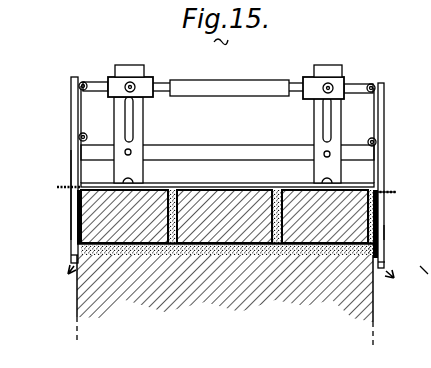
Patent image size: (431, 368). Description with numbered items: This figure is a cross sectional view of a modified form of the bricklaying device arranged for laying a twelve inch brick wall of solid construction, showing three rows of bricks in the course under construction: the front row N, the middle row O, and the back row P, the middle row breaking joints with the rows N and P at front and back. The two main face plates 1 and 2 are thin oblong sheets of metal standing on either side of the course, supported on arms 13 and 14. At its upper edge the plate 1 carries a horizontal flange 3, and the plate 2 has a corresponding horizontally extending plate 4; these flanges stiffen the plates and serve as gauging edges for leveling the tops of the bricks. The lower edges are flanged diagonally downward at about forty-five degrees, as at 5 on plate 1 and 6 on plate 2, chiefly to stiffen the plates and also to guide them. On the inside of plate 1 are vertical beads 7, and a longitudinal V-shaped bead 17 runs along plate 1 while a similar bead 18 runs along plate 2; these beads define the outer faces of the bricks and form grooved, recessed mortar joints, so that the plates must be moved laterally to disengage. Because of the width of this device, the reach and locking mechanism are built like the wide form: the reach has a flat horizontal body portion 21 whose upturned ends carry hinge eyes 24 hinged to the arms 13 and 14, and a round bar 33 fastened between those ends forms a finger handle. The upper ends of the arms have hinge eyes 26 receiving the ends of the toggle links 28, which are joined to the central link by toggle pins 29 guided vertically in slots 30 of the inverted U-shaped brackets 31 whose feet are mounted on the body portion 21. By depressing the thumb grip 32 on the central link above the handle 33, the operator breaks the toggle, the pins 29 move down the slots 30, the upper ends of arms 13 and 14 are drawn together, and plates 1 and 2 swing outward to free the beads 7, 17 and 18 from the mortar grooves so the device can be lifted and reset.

The side plate 1 is at (77, 214).
The side plate 2 is at (386, 235).
The horizontal flange 3 is at (58, 186).
The horizontally extending plate 4 is at (385, 190).
The flange 5 is at (72, 272).
The flange 6 is at (392, 277).
The vertical beads 7 is at (425, 273).
The arm 13 is at (70, 160).
The arm 14 is at (386, 134).
The longitudinal V-shaped bead 17 is at (70, 258).
The longitudinal V-shaped bead 18 is at (386, 262).
The horizontal body portion 21 is at (220, 182).
The hinge eyes 24 is at (78, 136).
The hinge eyes 26 is at (80, 82).
The lever 28 is at (94, 82).
The toggle pin 29 is at (132, 84).
The slots 30 is at (134, 120).
The vertical bracket 31 is at (120, 68).
The grip portion 32 is at (226, 80).
The round bar 33 is at (232, 145).
The row of bricks N is at (130, 230).
The block O is at (218, 232).
The row of bricks P is at (325, 232).